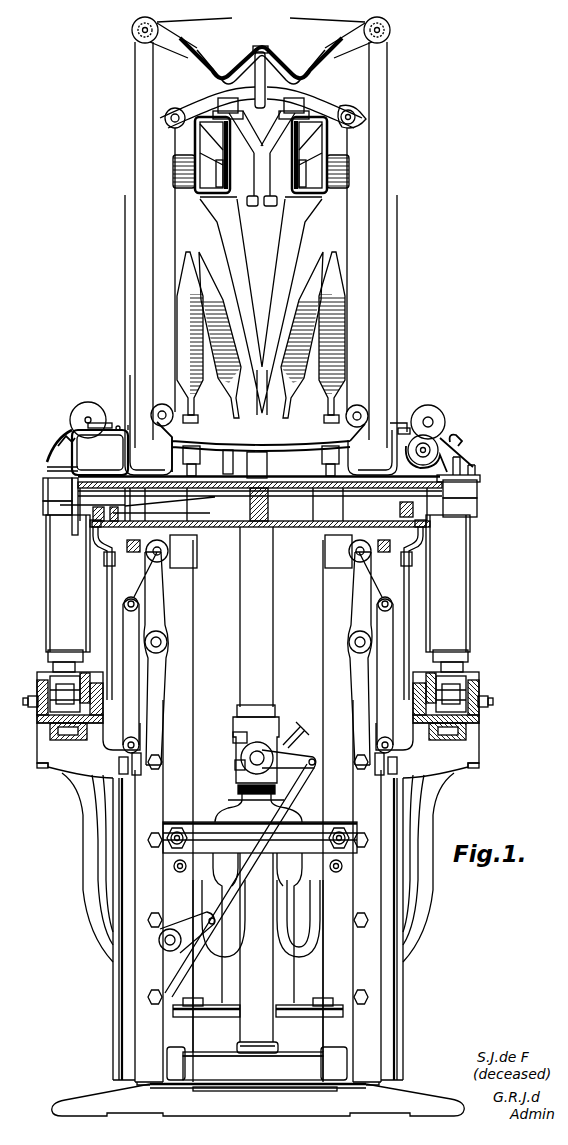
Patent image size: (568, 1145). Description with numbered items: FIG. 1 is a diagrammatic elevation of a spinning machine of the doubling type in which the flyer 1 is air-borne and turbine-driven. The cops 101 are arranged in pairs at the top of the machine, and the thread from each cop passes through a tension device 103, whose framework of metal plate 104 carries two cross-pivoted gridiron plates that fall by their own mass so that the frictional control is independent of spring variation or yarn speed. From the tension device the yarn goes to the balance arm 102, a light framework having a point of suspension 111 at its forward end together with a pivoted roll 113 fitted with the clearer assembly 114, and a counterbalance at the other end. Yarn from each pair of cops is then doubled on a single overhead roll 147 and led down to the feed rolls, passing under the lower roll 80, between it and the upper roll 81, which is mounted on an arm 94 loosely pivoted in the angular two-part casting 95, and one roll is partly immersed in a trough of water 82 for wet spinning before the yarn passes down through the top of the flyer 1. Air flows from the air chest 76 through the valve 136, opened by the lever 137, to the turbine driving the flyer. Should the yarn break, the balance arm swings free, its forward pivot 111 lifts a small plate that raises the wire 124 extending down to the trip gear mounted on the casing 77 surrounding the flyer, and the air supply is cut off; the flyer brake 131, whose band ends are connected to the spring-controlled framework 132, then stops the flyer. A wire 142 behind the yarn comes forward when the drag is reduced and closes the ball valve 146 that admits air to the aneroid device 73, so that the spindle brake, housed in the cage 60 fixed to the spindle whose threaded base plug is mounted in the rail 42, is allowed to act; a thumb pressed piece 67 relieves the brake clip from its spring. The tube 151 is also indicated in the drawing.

The flyer 1 is at (450, 662).
The rail 42 is at (413, 737).
The cage 60 is at (470, 680).
The thumb pressed piece 67 is at (488, 703).
The aneroid device 73 is at (425, 690).
The air chest 76 is at (210, 513).
The casing 77 is at (455, 570).
The lower roll 80 is at (446, 437).
The upper roll 81 is at (430, 412).
The trough of water 82 is at (395, 405).
The arm 94 is at (403, 426).
The angular two-part casting 95 is at (400, 450).
The cop 101 is at (340, 311).
The balance arm 102 is at (320, 105).
The tension device 103 is at (350, 180).
The framework of metal plate 104 is at (313, 168).
The point of suspension 111 is at (277, 59).
The pivoted roll 113 is at (355, 114).
The clearer assembly 114 is at (358, 122).
The wire 124 is at (247, 263).
The flyer brake 131 is at (453, 478).
The spring-controlled framework 132 is at (475, 467).
The valve 136 is at (443, 495).
The lever 137 is at (252, 503).
The wire 142 is at (462, 438).
The ball valve 146 is at (447, 516).
The overhead roll 147 is at (261, 50).
The tube 151 is at (423, 910).